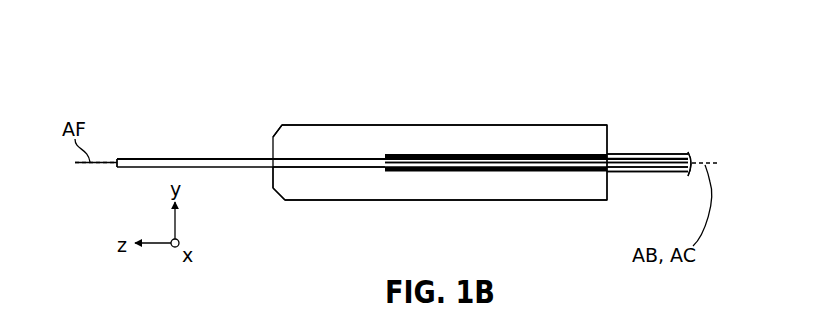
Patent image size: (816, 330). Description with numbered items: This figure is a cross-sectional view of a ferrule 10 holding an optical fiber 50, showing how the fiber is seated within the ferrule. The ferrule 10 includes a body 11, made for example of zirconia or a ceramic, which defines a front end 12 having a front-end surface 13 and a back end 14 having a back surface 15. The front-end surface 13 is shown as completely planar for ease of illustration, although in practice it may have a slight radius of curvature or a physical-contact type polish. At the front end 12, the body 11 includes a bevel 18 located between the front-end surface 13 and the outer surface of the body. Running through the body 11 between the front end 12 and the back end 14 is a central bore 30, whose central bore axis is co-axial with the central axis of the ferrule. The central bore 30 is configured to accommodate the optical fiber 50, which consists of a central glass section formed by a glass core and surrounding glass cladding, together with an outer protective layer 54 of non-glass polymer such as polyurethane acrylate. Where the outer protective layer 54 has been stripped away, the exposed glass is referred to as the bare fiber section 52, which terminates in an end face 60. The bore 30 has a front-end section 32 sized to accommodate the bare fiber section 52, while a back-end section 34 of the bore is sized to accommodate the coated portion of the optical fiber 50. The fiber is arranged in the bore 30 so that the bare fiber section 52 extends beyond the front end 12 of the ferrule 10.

The ferrule 10 is at (452, 145).
The body 11 is at (514, 140).
The front end 12 is at (260, 133).
The front-end surface 13 is at (272, 178).
The back end 14 is at (622, 133).
The back surface 15 is at (610, 183).
The bevel 18 is at (280, 127).
The central bore 30 is at (352, 174).
The front-end section 32 is at (328, 158).
The second channel 34 is at (460, 153).
The optical fiber 50 is at (678, 144).
The bare fiber section 52 is at (174, 160).
The outer protective layer 54 is at (635, 155).
The end face 60 is at (117, 165).